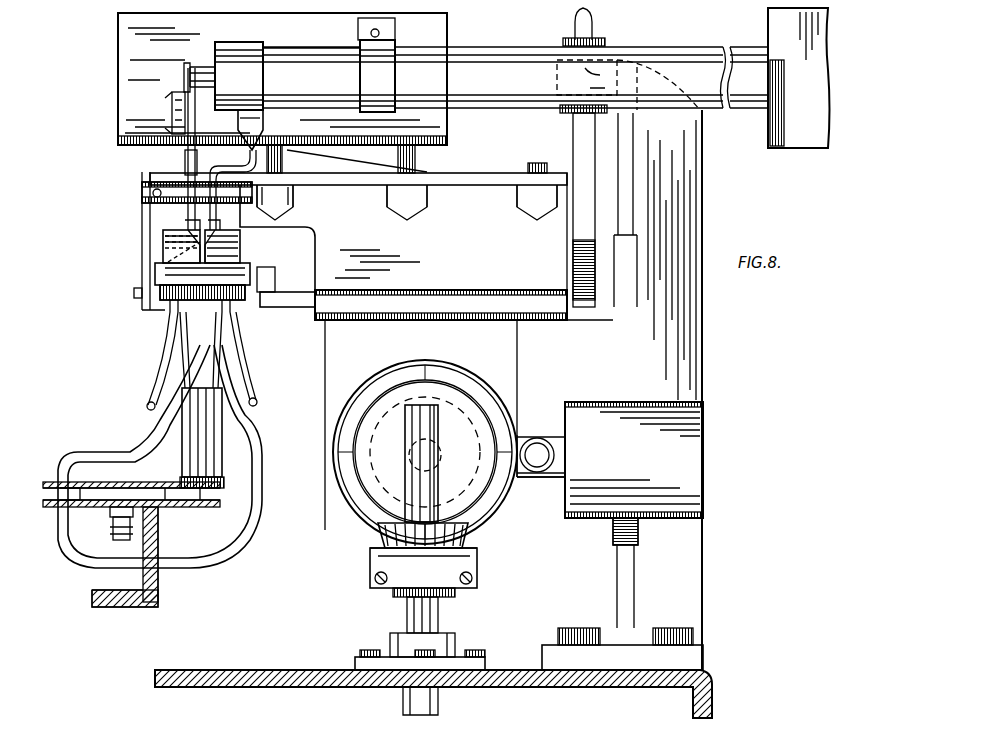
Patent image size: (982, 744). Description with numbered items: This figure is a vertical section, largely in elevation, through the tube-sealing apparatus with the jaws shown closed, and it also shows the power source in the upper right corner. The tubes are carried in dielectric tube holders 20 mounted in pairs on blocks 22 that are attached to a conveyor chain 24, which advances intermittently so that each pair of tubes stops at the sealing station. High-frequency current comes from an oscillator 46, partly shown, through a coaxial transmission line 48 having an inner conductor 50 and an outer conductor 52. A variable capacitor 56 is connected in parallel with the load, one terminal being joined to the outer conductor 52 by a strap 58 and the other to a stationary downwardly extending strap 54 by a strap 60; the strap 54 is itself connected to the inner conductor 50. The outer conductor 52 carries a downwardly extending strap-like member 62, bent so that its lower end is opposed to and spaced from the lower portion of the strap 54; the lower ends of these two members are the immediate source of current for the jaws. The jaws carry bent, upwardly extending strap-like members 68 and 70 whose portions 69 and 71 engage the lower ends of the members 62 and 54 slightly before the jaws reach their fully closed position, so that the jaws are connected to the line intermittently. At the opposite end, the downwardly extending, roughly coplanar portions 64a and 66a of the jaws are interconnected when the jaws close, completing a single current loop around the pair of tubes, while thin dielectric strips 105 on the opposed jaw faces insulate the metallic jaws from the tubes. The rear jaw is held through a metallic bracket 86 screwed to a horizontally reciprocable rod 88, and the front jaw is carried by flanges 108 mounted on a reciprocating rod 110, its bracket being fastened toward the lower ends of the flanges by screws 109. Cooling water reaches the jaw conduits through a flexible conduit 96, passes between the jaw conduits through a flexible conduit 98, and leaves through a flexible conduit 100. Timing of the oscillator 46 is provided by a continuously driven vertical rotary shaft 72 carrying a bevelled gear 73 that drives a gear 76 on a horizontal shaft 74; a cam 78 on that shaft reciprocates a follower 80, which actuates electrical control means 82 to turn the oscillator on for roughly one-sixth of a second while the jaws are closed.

The tube holder 20 is at (183, 462).
The block 22 is at (210, 500).
The conveyor chain 24 is at (110, 537).
The high-frequency oscillator 46 is at (775, 25).
The coaxial transmission line 48 is at (650, 32).
The inner conductor 50 is at (193, 68).
The outer conductor 52 is at (240, 65).
The strap 54 is at (185, 160).
The variable capacitor 56 is at (118, 60).
The strap 58 is at (395, 47).
The strap 60 is at (176, 115).
The strap-like member 62 is at (240, 162).
The bent portion of rear jaw 64a is at (235, 340).
The bent portion of front jaw 66a is at (162, 342).
The strap-like member 68 is at (228, 255).
The engaging portion 69 is at (214, 228).
The strap-like member 70 is at (172, 245).
The engaging portion 71 is at (186, 218).
The rotary shaft 72 is at (432, 622).
The bevelled gear 73 is at (470, 545).
The horizontal shaft 74 is at (405, 468).
The gear 76 is at (503, 518).
The cam 78 is at (522, 445).
The follower 80 is at (545, 467).
The electrical control means 82 is at (693, 478).
The metallic bracket 86 is at (250, 306).
The reciprocable rod 88 is at (315, 320).
The flexible conduit 96 is at (152, 368).
The flexible conduit 98 is at (112, 455).
The flexible conduit 100 is at (256, 385).
The dielectric strips 105 is at (172, 304).
The flange 108 is at (142, 214).
The screw 109 is at (111, 305).
The reciprocating rod 110 is at (142, 194).